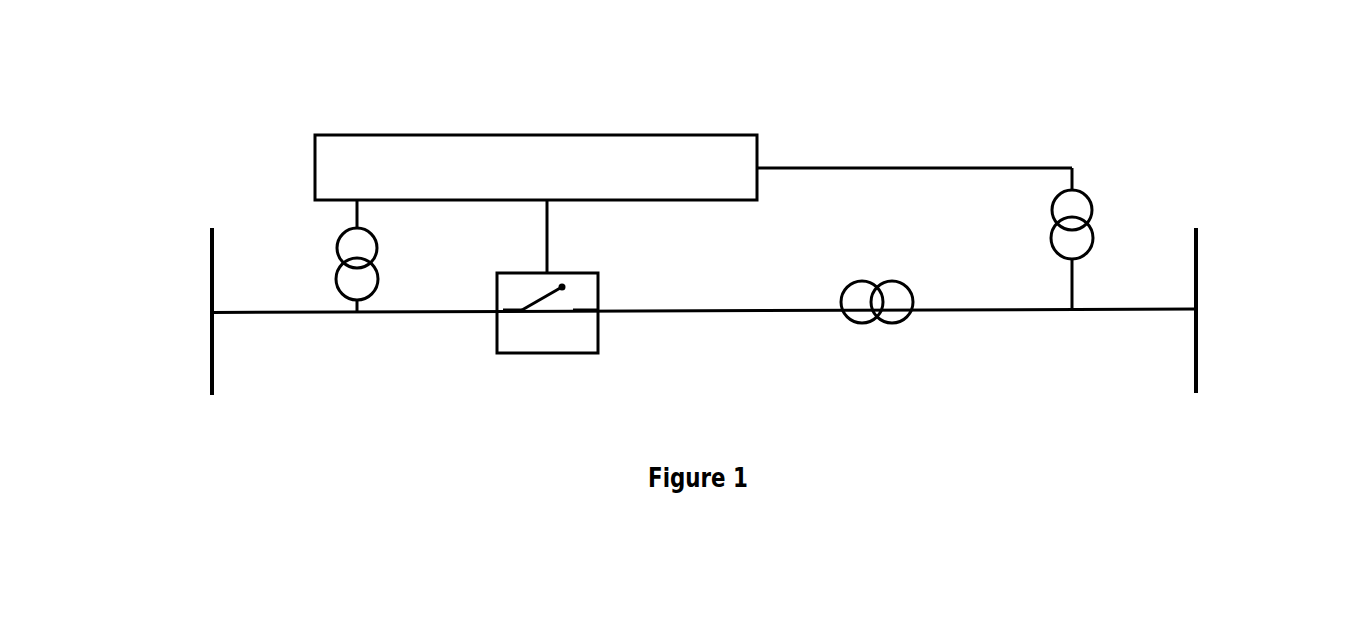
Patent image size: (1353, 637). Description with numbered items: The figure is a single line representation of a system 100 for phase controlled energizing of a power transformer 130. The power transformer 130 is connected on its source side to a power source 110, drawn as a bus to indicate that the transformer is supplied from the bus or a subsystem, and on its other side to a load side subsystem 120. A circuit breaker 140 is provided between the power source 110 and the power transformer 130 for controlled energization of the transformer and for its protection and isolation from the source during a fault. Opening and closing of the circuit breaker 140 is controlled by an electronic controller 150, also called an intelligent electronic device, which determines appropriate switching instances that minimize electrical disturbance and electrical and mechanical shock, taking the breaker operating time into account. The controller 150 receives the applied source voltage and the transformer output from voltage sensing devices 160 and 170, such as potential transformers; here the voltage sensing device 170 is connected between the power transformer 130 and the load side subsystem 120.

The system 100 is at (1307, 67).
The power source 110 is at (192, 282).
The load side subsystem 120 is at (1210, 270).
The power transformer 130 is at (892, 268).
The circuit breaker 140 is at (597, 270).
The controller 150 is at (757, 135).
The voltage sensing device 160 is at (330, 273).
The voltage sensing device 170 is at (1088, 263).